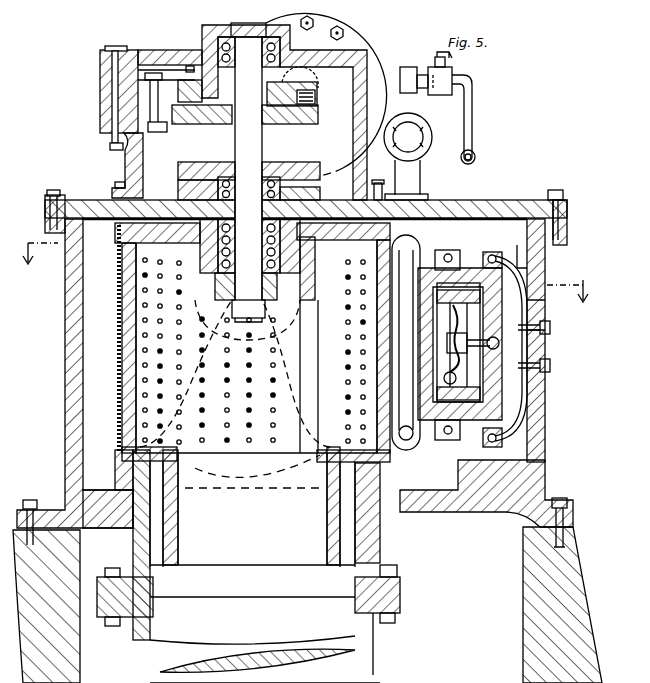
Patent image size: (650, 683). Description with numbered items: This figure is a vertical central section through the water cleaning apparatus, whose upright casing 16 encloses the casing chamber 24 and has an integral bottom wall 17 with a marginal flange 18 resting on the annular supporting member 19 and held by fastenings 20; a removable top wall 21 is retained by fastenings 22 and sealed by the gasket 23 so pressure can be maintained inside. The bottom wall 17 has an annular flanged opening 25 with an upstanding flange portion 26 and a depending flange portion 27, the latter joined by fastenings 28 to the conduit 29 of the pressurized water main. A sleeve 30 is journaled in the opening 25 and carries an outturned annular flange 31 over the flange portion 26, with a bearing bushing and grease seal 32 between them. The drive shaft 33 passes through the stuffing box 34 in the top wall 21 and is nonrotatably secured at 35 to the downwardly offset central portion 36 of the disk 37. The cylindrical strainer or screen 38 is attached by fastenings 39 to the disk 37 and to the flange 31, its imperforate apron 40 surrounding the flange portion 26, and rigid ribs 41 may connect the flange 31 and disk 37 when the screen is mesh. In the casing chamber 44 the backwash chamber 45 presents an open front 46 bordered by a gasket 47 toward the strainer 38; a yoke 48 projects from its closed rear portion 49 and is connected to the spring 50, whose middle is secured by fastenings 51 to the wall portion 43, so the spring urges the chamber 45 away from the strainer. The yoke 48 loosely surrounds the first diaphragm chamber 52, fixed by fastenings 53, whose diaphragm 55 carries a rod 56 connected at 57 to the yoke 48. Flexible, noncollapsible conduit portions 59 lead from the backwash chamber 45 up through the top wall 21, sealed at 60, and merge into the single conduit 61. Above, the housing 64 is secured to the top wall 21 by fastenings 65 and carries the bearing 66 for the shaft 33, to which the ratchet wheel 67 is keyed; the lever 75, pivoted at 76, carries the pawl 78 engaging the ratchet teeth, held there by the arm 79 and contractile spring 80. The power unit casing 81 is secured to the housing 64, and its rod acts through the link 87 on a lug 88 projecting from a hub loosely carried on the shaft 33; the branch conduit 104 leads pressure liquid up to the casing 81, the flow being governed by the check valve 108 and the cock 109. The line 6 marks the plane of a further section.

The section line 6- 6 is at (305, 284).
The casing 16 is at (66, 378).
The bottom wall 17 is at (420, 512).
The marginal flange 18 is at (566, 520).
The annular supporting member 19 is at (585, 635).
The fastenings 20 is at (564, 494).
The top wall 21 is at (470, 200).
The fastenings 22 is at (556, 196).
The sealing gasket 23 is at (75, 215).
The casing chamber 24 is at (70, 330).
The annular flanged opening 25 is at (133, 522).
The upstanding flange portion 26 is at (117, 481).
The depending flange portion 27 is at (372, 560).
The fastenings 28 is at (390, 622).
The conduit 29 is at (380, 668).
The sleeve 30 is at (326, 500).
The outturned annular flange 31 is at (178, 458).
The bearing bushing and grease seal 32 is at (178, 510).
The drive shaft 33 is at (249, 161).
The stuffing box 34 is at (262, 204).
The nonrotatable connection 35 is at (262, 314).
The downwardly offset central portion 36 is at (353, 296).
The disk 37 is at (254, 343).
The strainer or screen 38 is at (115, 296).
The fastenings 39 is at (120, 450).
The apron 40 is at (380, 470).
The rigid ribs 41 is at (118, 373).
The wall portion 43 is at (547, 412).
The casing chamber 44 is at (535, 255).
The backwash chamber 45 is at (403, 399).
The open front 46 is at (404, 340).
The gasket 47 is at (406, 342).
The yoke 48 is at (478, 255).
The closed rear portion 49 is at (436, 250).
The spring 50 is at (547, 308).
The fastenings 51 is at (551, 340).
The first diaphragm chamber 52 is at (480, 300).
The fastenings 53 is at (450, 252).
The diaphragm 55 is at (458, 380).
The rod 56 is at (470, 318).
The rod-to-yoke connection 57 is at (495, 340).
The conduit portions 59 is at (422, 466).
The sealed connection 60 is at (430, 194).
The conduit 61 is at (432, 137).
The housing 64 is at (370, 57).
The fastenings 65 is at (377, 180).
The bearing 66 is at (200, 50).
The ratchet wheel 67 is at (275, 123).
The lever 75 is at (106, 96).
The pivot 76 is at (100, 113).
The pawl 78 is at (143, 142).
The arm 79 is at (152, 70).
The contractile spring 80 is at (172, 136).
The power unit casing 81 is at (350, 38).
The link 87 is at (316, 97).
The lug 88 is at (305, 84).
The branch conduit 104 is at (473, 118).
The check valve 108 is at (408, 94).
The cock 109 is at (432, 96).